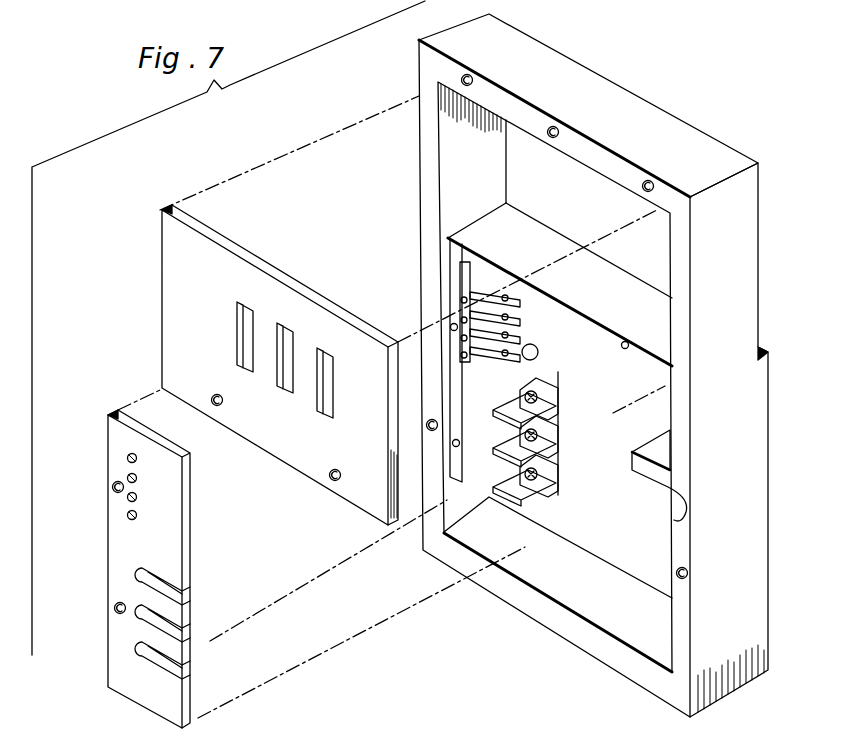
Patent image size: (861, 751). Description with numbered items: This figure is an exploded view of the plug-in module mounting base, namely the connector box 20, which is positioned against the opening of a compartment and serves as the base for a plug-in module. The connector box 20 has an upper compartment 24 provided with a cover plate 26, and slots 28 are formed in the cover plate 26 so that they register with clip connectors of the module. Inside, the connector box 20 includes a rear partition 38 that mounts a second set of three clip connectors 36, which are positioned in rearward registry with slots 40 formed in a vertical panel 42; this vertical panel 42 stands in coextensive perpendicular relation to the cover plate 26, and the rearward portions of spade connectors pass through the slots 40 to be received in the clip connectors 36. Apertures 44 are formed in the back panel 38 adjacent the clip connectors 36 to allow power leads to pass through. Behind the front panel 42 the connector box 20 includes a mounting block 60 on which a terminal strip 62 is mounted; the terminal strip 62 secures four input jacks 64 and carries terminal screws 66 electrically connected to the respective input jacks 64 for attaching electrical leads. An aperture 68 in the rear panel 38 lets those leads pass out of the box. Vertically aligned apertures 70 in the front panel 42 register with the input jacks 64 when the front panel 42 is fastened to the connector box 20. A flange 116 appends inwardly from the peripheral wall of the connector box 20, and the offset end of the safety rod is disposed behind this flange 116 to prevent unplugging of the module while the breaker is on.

The connector box 20 is at (725, 323).
The upper compartment 24 is at (666, 264).
The cover plate 26 is at (250, 273).
The slots 28 is at (323, 388).
The clip connectors 36 is at (492, 443).
The rear partition 38 is at (652, 417).
The slots 40 is at (160, 577).
The vertical panel 42 is at (157, 532).
The apertures 44 is at (538, 372).
The mounting block 60 is at (471, 440).
The terminal strip 62 is at (472, 273).
The input jacks 64 is at (492, 292).
The terminal screws 66 is at (528, 318).
The aperture 68 is at (530, 345).
The apertures 70 is at (113, 484).
The flange 116 is at (648, 475).